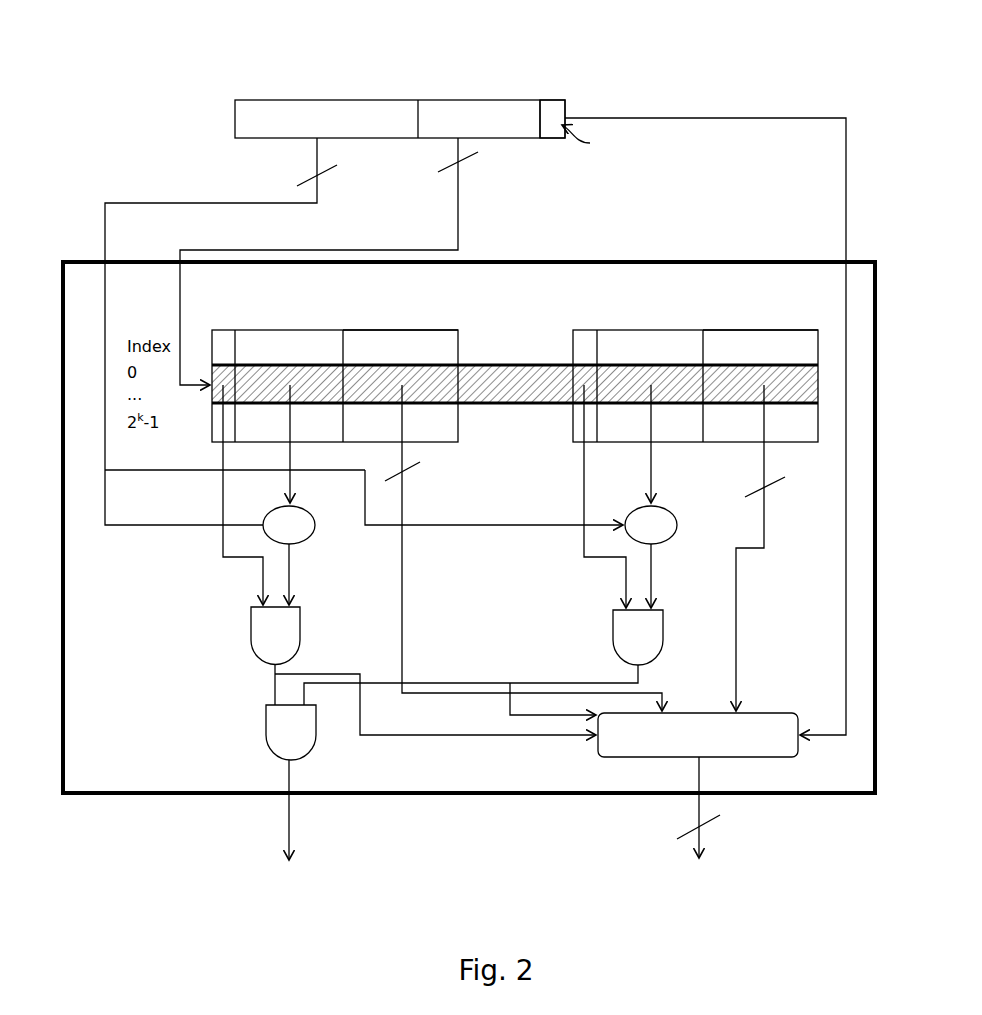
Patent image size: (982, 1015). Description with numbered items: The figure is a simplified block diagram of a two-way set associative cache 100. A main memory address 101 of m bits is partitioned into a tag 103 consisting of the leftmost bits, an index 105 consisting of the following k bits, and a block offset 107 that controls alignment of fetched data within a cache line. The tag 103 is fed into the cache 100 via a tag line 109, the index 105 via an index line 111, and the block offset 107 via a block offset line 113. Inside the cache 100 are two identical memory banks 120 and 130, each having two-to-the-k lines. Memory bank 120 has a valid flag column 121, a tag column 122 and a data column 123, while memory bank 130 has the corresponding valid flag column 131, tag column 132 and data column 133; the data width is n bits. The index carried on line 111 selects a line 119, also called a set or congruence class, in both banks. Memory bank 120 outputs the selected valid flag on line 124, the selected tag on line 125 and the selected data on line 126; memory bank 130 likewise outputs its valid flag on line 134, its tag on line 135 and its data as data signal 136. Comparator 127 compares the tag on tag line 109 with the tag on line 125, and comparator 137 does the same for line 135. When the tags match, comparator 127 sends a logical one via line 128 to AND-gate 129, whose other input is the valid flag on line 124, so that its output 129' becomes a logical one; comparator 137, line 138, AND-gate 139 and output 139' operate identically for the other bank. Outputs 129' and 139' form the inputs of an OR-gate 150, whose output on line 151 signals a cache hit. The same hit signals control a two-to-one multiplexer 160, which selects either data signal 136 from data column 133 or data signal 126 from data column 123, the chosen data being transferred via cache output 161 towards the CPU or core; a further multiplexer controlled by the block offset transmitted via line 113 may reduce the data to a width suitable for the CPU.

The two-way set associative cache 100 is at (738, 260).
The main memory address 101 is at (514, 88).
The tag 103 is at (235, 117).
The index 105 is at (503, 139).
The block offset 107 is at (567, 103).
The tag line 109 is at (195, 203).
The index line 111 is at (458, 209).
The block offset line 113 is at (803, 117).
The selected line 119 is at (493, 385).
The memory bank 120 is at (615, 300).
The valid flag column 121 is at (573, 341).
The tag column 122 is at (668, 330).
The data column 123 is at (770, 330).
The valid flag output line 124 is at (584, 497).
The tag output line 125 is at (652, 452).
The data output line 126 is at (737, 582).
The tag comparator 127 is at (668, 538).
The comparator output line 128 is at (652, 585).
The AND-gate 129 is at (585, 637).
The AND-gate output 129' is at (471, 686).
The memory bank 130 is at (459, 318).
The valid flag column 131 is at (223, 330).
The tag column 132 is at (300, 330).
The data column 133 is at (441, 330).
The valid flag output line 134 is at (223, 507).
The tag output line 135 is at (290, 443).
The data signal line 136 is at (403, 560).
The tag comparator 137 is at (310, 537).
The comparator output line 138 is at (291, 585).
The AND-gate 139 is at (223, 626).
The AND-gate output 139' is at (382, 709).
The OR-gate 150 is at (266, 716).
The hit output line 151 is at (291, 815).
The 2-to-1 multiplexer 160 is at (600, 752).
The cache output 161 is at (705, 838).